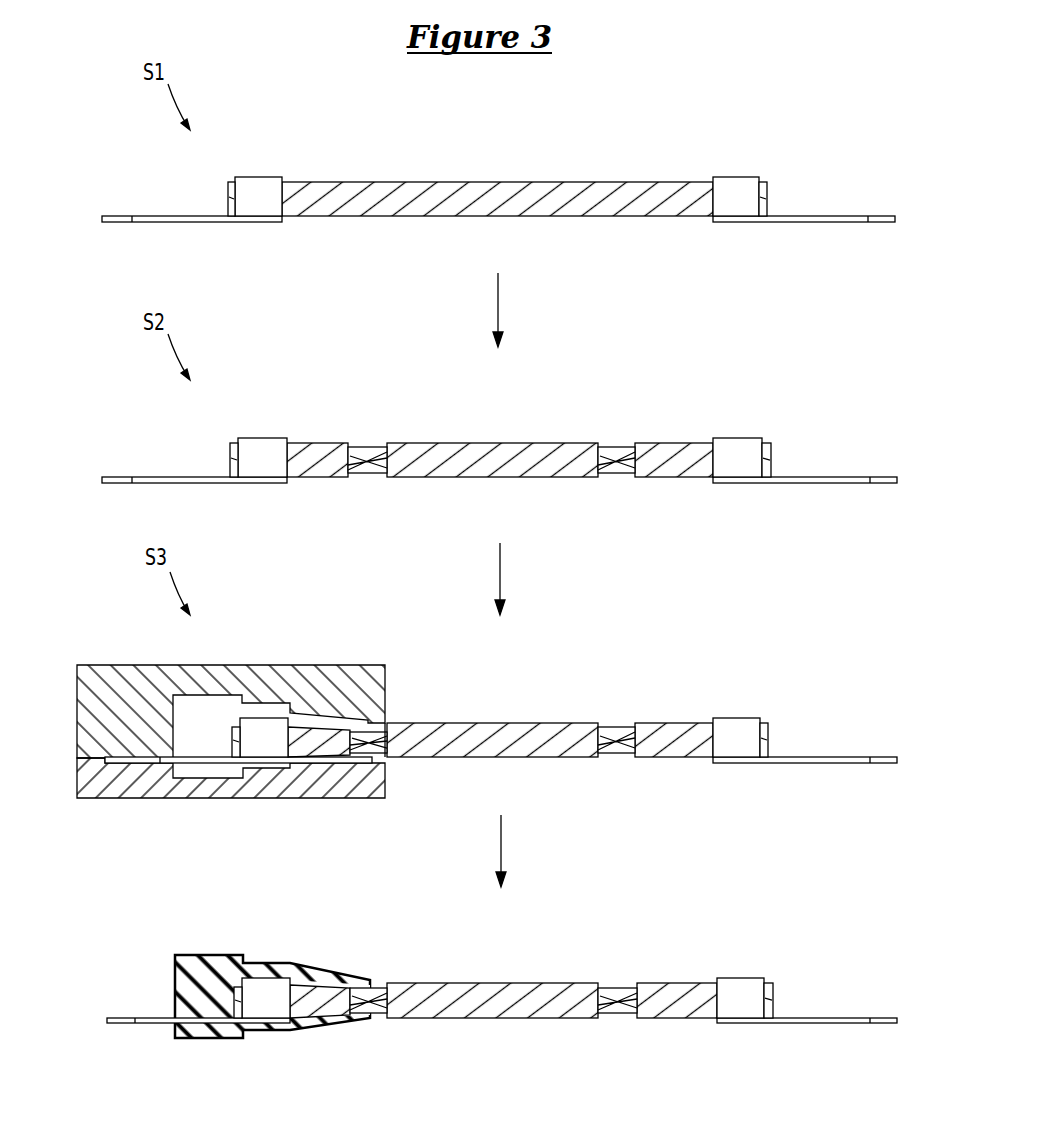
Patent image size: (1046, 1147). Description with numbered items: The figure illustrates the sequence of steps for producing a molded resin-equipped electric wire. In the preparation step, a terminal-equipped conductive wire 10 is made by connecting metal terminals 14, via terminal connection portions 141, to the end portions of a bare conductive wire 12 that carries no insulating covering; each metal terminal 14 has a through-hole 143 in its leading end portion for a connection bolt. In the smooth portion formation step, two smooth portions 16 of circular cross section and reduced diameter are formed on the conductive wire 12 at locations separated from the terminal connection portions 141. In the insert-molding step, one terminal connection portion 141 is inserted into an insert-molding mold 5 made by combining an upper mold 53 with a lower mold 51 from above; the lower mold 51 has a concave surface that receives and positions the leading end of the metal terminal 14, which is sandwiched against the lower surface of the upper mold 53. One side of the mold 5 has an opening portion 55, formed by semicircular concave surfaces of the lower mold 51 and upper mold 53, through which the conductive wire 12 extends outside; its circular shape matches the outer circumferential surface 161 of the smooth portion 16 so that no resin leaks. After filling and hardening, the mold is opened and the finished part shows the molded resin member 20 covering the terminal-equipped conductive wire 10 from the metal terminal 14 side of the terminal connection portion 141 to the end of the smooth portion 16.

The insert-molding mold 5 is at (231, 727).
The terminal-equipped conductive wire 10 is at (772, 173).
The conductive wire 12 is at (482, 182).
The metal terminal 14 is at (168, 216).
The smooth portion 16 is at (362, 447).
The molded resin member 20 is at (212, 955).
The lower mold 51 is at (335, 798).
The upper mold 53 is at (325, 665).
The opening portion 55 is at (387, 742).
The terminal connection portion 141 is at (260, 188).
The through-hole 143 is at (132, 224).
The outer circumferential surface 161 is at (370, 473).